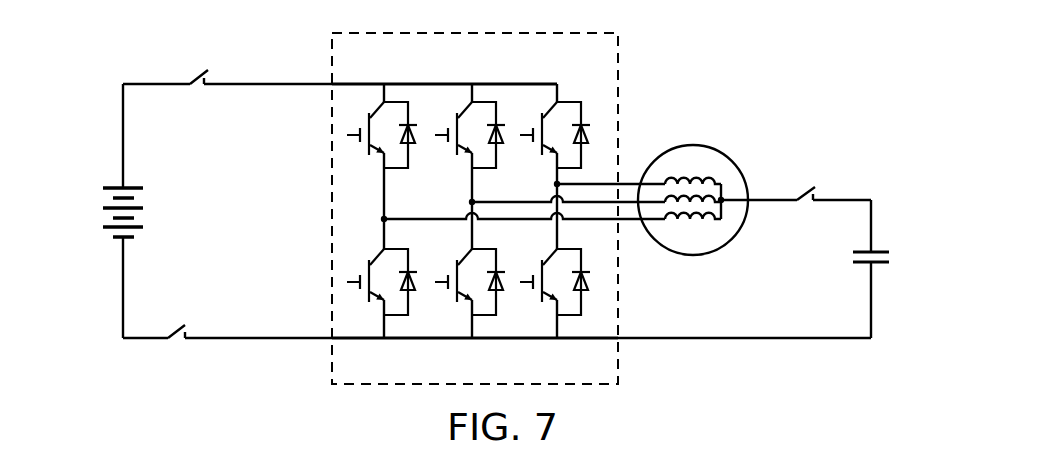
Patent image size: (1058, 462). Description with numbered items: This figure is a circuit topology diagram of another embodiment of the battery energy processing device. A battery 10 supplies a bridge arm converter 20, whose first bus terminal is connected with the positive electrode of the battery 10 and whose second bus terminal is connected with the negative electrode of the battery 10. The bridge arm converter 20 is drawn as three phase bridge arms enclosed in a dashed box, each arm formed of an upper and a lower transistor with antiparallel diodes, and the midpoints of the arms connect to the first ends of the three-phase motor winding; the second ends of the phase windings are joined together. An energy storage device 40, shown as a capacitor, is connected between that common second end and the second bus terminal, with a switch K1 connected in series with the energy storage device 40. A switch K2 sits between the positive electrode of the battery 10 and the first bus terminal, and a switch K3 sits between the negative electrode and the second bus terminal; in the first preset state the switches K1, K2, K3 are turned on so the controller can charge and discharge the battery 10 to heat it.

The battery 10 is at (99, 209).
The bridge arm converter 20 is at (627, 56).
The energy storage device 40 is at (897, 257).
The switch K1 is at (796, 189).
The switch K2 is at (227, 73).
The switch K3 is at (227, 328).